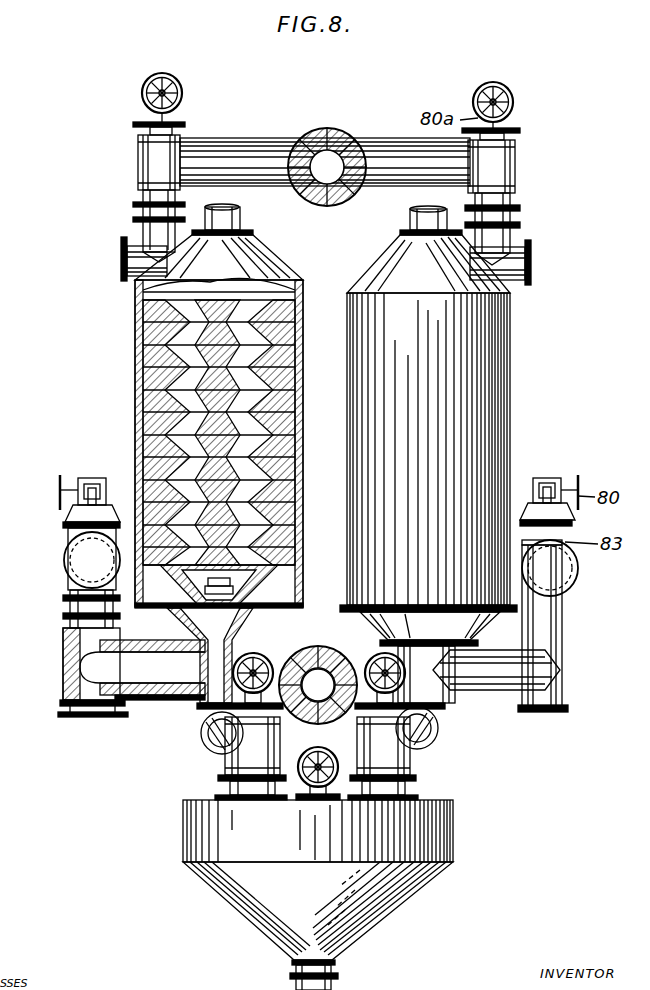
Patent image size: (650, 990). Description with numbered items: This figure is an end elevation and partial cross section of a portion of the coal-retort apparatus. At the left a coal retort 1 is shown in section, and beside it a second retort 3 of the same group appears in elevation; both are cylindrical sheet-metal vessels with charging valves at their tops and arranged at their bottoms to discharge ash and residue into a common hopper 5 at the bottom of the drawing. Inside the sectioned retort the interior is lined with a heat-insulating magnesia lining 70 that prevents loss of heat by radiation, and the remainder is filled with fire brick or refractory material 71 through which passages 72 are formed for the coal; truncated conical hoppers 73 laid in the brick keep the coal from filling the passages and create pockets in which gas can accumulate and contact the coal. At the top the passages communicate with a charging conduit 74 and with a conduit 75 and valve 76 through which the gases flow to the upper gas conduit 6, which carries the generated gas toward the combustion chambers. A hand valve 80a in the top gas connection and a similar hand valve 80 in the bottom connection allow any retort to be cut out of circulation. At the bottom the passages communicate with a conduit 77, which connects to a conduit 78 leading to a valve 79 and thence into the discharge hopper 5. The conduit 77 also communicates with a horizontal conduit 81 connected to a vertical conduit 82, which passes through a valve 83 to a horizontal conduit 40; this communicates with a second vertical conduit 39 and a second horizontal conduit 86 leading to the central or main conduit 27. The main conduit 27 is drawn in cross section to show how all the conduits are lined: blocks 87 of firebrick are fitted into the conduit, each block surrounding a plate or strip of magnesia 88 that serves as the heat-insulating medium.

The coal retort 1 is at (208, 406).
The coal retort 3 is at (500, 432).
The hopper 5 is at (318, 895).
The conduit 6 is at (336, 131).
The central or main conduit 27 is at (325, 650).
The second vertical conduit 39 is at (66, 608).
The horizontal conduit 40 is at (66, 568).
The magnesia lining 70 is at (140, 350).
The refractory material 71 is at (283, 398).
The passages 72 is at (175, 330).
The truncated conical hoppers 73 is at (178, 441).
The conduit 74 is at (245, 218).
The conduit 75 is at (140, 226).
The valve 76 is at (138, 160).
The conduit 77 is at (185, 622).
The conduit 78 is at (204, 740).
The valve 79 is at (410, 750).
The hand valve 80 is at (60, 500).
The hand valve 80a is at (142, 112).
The horizontal conduit 81 is at (152, 696).
The vertical conduit 82 is at (63, 660).
The valve 83 is at (68, 544).
The second horizontal conduit 86 is at (180, 700).
The blocks 87 is at (318, 685).
The plate or strip of magnesia 88 is at (312, 748).